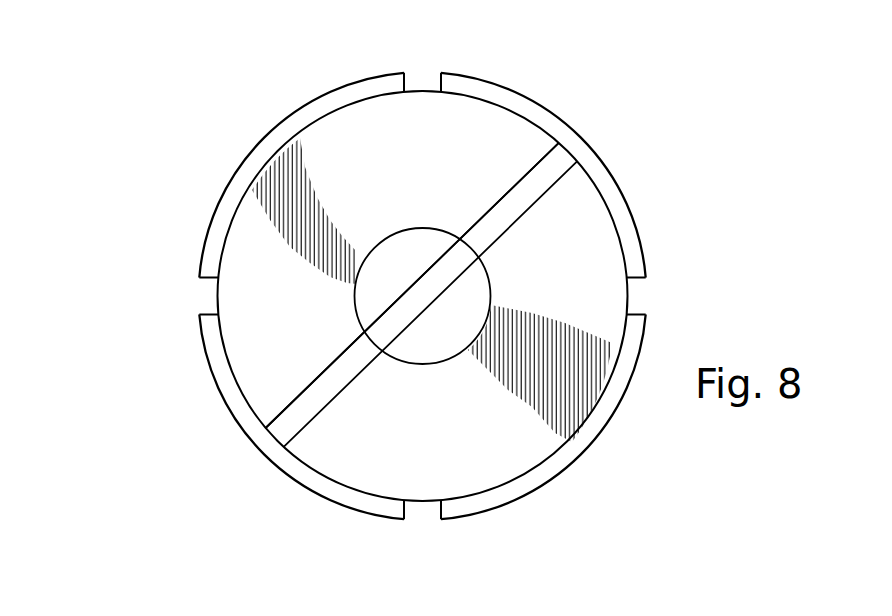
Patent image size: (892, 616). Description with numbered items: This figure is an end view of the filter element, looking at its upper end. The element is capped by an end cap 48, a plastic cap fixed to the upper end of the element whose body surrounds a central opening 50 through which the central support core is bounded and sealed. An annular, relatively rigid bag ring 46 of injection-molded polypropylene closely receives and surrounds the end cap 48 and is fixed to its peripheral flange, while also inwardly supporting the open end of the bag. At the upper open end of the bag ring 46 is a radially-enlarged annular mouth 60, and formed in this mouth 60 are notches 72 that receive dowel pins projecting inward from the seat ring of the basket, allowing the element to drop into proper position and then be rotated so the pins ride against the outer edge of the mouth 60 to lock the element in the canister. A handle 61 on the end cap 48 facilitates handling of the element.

The bag ring 46 is at (223, 377).
The end cap 48 is at (566, 407).
The central opening 50 is at (422, 345).
The radially-enlarged annular mouth 60 is at (277, 455).
The handle 61 is at (328, 385).
The notches 72 is at (423, 82).